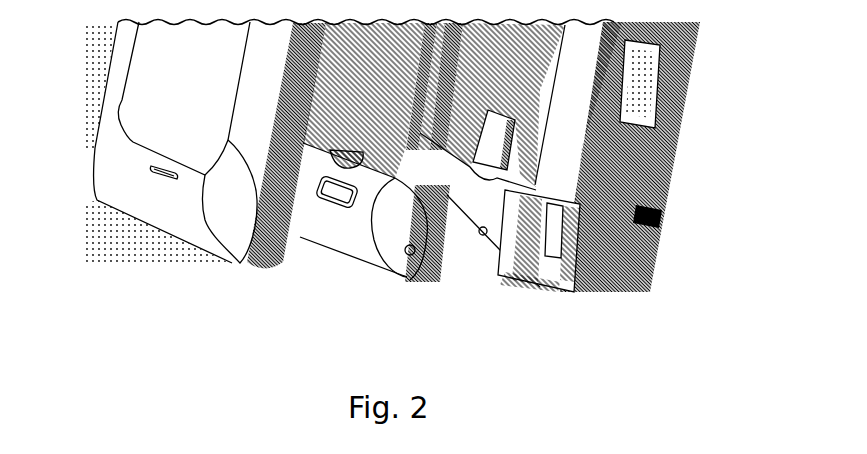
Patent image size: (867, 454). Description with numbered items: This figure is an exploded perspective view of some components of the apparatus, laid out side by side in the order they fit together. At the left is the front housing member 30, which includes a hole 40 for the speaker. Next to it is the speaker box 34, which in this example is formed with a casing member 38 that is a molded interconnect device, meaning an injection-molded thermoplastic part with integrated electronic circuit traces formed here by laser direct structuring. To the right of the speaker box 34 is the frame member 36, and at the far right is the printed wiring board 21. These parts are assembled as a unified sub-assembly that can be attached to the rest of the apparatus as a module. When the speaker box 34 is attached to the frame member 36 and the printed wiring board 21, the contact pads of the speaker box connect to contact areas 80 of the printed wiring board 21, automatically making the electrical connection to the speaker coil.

The printed wiring board 21 is at (670, 160).
The front housing member 30 is at (100, 160).
The speaker box 34 is at (333, 220).
The frame member 36 is at (503, 270).
The casing member 38 is at (355, 270).
The hole 40 is at (161, 178).
The contact area 80 is at (652, 222).